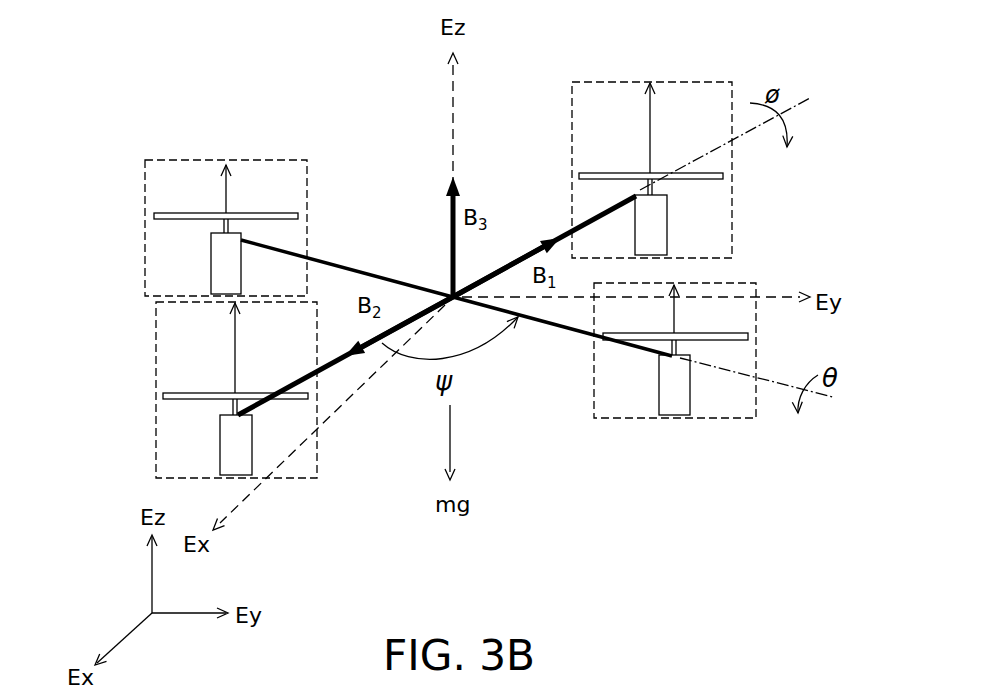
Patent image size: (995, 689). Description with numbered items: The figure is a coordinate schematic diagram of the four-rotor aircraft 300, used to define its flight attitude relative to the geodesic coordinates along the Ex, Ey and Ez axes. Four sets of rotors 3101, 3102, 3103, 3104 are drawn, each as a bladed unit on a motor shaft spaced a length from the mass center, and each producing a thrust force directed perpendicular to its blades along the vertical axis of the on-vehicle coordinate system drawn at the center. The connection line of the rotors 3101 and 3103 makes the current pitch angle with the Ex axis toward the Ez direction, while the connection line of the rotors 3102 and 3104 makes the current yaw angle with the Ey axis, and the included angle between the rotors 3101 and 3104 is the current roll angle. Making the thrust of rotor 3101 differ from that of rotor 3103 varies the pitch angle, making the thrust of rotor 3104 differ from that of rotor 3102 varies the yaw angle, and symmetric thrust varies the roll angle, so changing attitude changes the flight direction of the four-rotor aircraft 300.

The four-rotor aircraft 300 is at (823, 619).
The rotor 3101 is at (756, 368).
The rotor 3102 is at (732, 233).
The rotor 3103 is at (145, 198).
The rotor 3104 is at (156, 379).